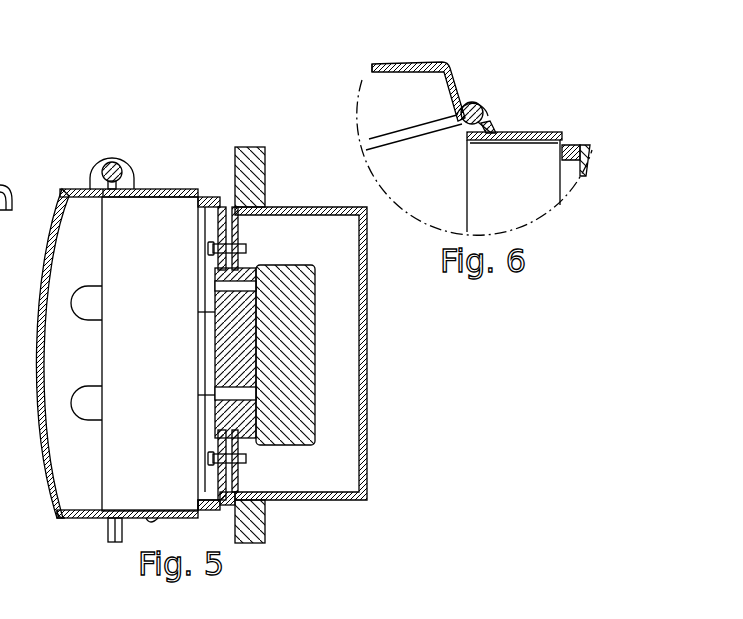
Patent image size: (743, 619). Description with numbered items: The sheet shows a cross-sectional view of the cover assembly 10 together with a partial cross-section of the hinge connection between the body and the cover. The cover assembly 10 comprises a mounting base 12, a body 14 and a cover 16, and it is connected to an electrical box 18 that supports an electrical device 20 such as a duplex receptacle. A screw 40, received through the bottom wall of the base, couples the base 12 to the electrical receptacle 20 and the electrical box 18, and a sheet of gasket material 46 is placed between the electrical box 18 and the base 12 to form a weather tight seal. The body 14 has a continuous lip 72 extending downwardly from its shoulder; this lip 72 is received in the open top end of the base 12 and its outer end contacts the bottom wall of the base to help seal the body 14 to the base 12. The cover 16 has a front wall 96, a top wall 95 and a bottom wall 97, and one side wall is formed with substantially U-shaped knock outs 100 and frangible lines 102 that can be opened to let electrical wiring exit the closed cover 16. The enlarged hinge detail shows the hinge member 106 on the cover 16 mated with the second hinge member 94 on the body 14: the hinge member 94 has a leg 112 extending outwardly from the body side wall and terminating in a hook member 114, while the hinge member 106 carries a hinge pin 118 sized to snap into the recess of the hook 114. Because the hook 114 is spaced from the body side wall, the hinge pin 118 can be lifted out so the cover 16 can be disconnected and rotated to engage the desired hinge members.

In FIG. 5, the cover assembly 10 is at (294, 182).
In FIG. 5, the mounting base 12 is at (208, 198).
In FIG. 6, the mounting base 12 is at (582, 143).
In FIG. 5, the body 14 is at (157, 188).
In FIG. 6, the body 14 is at (549, 132).
In FIG. 5, the cover 16 is at (62, 185).
In FIG. 6, the cover 16 is at (408, 64).
In FIG. 5, the electrical box 18 is at (312, 207).
In FIG. 5, the electrical device 20 is at (291, 265).
In FIG. 5, the screw 40 is at (208, 249).
In FIG. 5, the gasket material 46 is at (228, 210).
In FIG. 5, the lip 72 is at (200, 220).
In FIG. 6, the lip 72 is at (566, 157).
In FIG. 5, the second hinge member 94 is at (120, 163).
In FIG. 5, the top wall 95 is at (80, 189).
In FIG. 5, the front wall 96 is at (43, 237).
In FIG. 5, the bottom wall 97 is at (72, 520).
In FIG. 5, the U-shaped knock outs 100 is at (89, 300).
In FIG. 5, the frangible lines 102 is at (76, 322).
In FIG. 5, the hinge member 106 is at (104, 168).
In FIG. 6, the hinge member 106 is at (472, 96).
In FIG. 6, the leg 112 is at (494, 128).
In FIG. 6, the hook member 114 is at (478, 104).
In FIG. 6, the hinge pin 118 is at (490, 116).